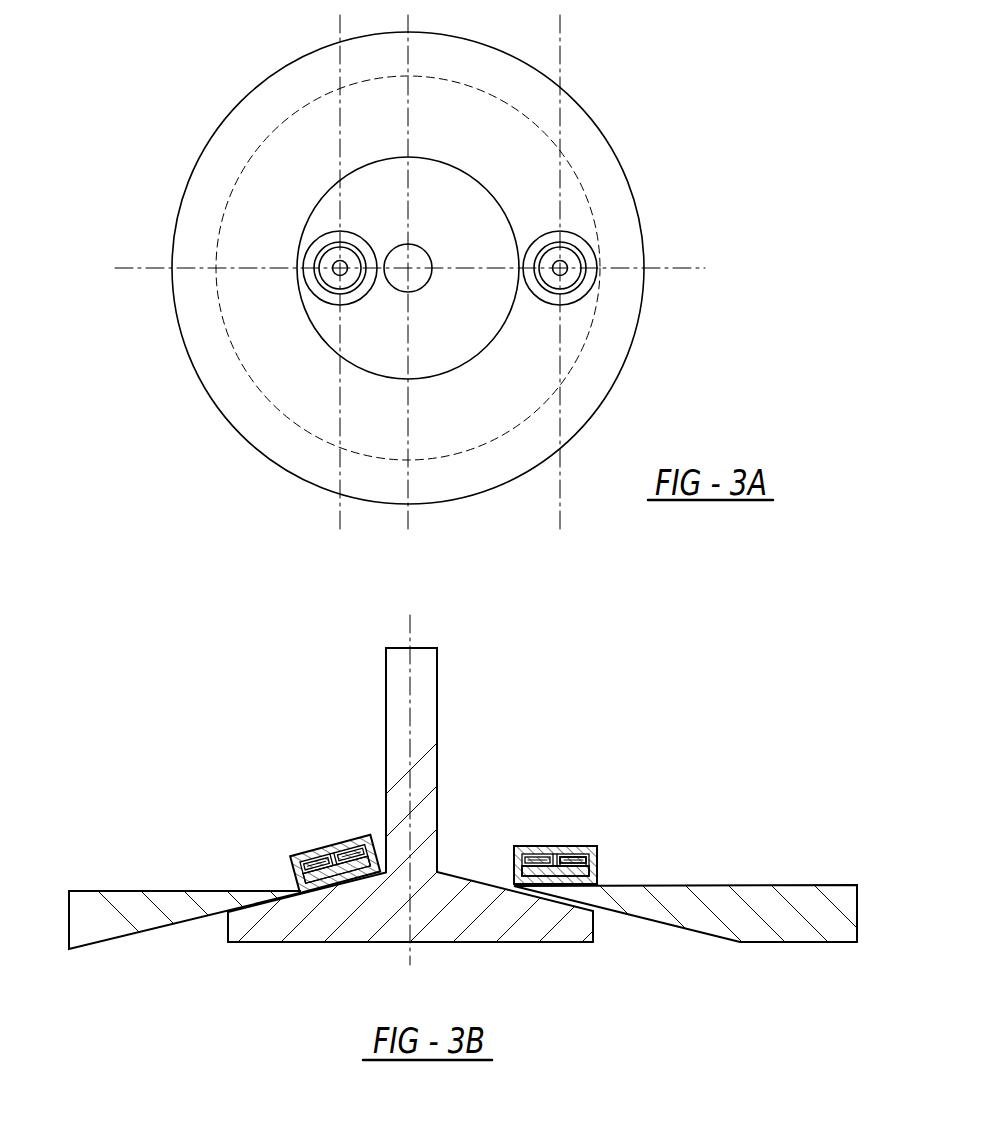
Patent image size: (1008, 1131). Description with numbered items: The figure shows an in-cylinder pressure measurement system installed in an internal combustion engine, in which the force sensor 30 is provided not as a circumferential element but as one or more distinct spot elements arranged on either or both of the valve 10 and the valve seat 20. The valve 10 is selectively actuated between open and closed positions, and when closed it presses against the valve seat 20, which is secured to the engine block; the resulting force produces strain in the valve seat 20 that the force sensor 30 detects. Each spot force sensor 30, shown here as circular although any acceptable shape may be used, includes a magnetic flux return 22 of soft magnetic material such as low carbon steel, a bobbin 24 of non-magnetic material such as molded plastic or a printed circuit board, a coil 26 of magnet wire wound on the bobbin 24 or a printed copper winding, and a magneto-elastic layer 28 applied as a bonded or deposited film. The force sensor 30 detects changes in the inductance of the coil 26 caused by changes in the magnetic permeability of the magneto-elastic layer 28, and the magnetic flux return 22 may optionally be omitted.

In FIG. 3A, the valve 10 is at (488, 186).
In FIG. 3B, the valve 10 is at (542, 925).
In FIG. 3B, the valve seat 20 is at (772, 928).
In FIG. 3B, the magnetic flux return 22 is at (547, 850).
In FIG. 3B, the bobbin 24 is at (580, 858).
In FIG. 3B, the coil 26 is at (587, 868).
In FIG. 3B, the magneto-elastic layer 28 is at (585, 878).
In FIG. 3A, the force sensor 30 is at (331, 254).
In FIG. 3B, the force sensor 30 is at (262, 842).